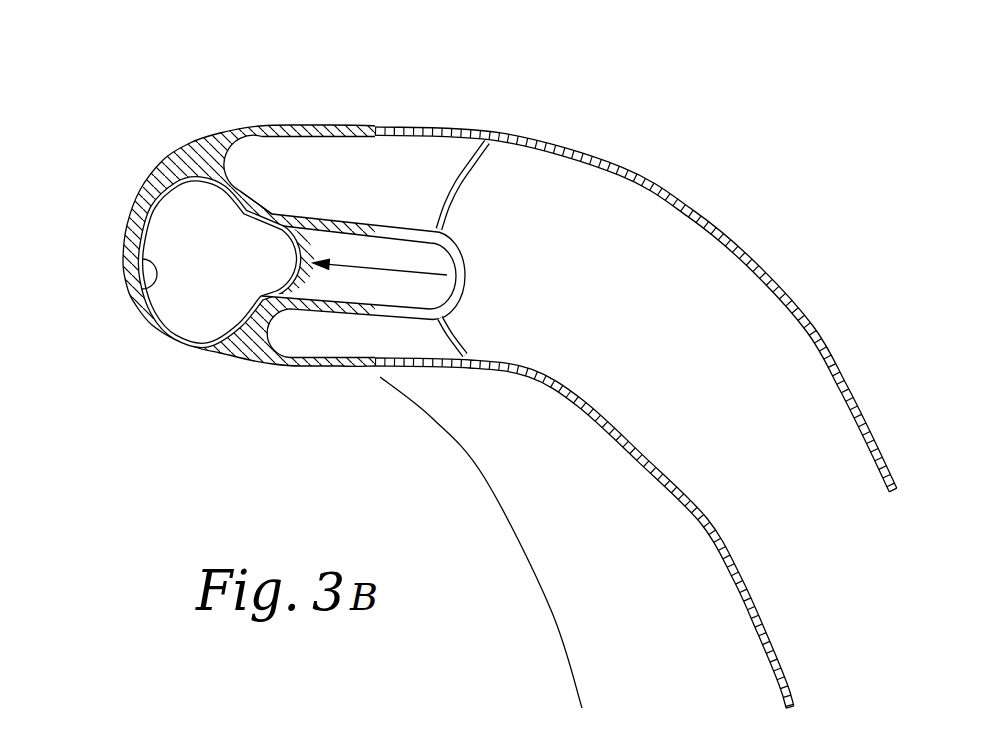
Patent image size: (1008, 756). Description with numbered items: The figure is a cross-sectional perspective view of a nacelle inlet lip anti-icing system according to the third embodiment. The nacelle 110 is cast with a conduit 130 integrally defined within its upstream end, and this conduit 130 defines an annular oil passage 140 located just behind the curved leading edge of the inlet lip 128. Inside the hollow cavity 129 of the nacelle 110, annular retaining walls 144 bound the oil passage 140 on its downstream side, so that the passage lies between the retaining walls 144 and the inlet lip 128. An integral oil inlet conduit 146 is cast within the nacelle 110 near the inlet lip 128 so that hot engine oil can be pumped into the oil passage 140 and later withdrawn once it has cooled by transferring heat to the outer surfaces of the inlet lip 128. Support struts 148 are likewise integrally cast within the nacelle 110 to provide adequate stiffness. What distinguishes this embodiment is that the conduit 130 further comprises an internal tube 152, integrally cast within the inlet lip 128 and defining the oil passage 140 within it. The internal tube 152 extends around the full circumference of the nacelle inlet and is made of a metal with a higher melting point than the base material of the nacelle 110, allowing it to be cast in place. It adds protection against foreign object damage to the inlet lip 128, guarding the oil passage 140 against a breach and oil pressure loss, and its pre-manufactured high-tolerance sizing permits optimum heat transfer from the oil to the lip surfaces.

The nacelle 110 is at (740, 240).
The inlet lip 128 is at (145, 320).
The hollow cavity 129 is at (332, 177).
The conduit 130 is at (242, 194).
The oil passage 140 is at (177, 242).
The retaining walls 144 is at (253, 347).
The oil inlet conduit 146 is at (377, 223).
The support struts 148 is at (458, 178).
The internal tube 152 is at (156, 291).